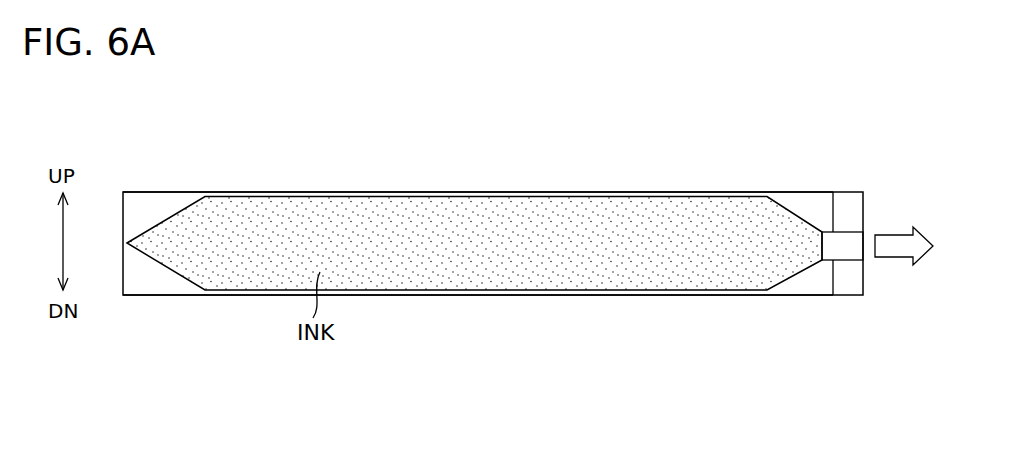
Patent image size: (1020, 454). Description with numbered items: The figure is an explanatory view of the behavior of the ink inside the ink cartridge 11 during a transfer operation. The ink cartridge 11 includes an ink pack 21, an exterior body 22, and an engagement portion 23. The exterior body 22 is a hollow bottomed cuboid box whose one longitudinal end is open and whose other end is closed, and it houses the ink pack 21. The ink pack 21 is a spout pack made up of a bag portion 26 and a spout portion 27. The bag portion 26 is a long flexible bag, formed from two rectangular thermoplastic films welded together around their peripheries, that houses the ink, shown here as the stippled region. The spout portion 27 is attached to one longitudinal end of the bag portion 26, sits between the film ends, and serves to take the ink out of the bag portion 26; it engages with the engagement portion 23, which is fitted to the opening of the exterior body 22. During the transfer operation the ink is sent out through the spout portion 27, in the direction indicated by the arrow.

The ink cartridge 11 is at (657, 170).
The ink pack 21 is at (148, 270).
The exterior body 22 is at (153, 192).
The engagement portion 23 is at (863, 210).
The bag portion 26 is at (468, 196).
The spout portion 27 is at (843, 230).